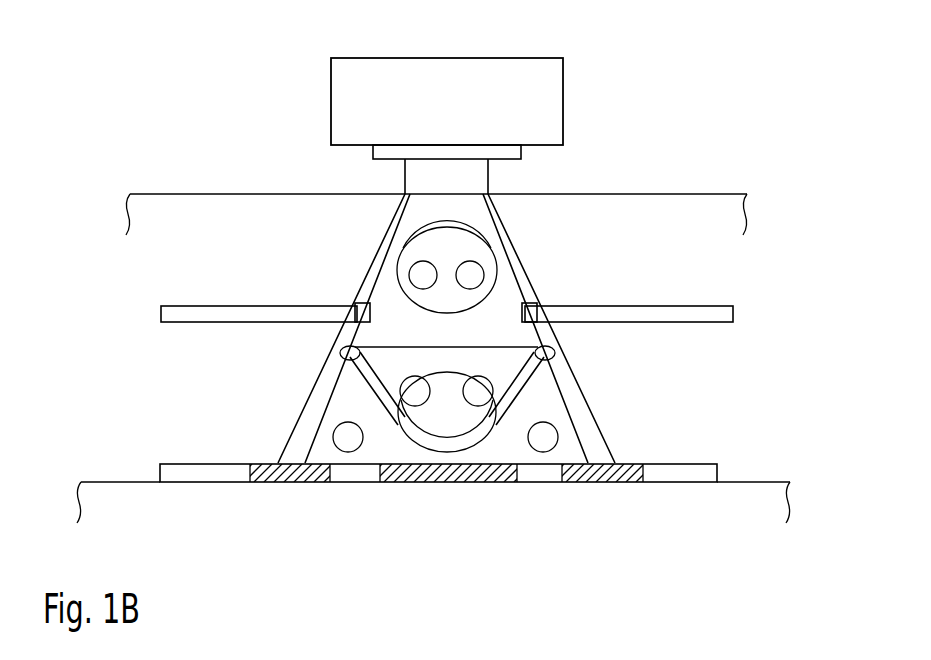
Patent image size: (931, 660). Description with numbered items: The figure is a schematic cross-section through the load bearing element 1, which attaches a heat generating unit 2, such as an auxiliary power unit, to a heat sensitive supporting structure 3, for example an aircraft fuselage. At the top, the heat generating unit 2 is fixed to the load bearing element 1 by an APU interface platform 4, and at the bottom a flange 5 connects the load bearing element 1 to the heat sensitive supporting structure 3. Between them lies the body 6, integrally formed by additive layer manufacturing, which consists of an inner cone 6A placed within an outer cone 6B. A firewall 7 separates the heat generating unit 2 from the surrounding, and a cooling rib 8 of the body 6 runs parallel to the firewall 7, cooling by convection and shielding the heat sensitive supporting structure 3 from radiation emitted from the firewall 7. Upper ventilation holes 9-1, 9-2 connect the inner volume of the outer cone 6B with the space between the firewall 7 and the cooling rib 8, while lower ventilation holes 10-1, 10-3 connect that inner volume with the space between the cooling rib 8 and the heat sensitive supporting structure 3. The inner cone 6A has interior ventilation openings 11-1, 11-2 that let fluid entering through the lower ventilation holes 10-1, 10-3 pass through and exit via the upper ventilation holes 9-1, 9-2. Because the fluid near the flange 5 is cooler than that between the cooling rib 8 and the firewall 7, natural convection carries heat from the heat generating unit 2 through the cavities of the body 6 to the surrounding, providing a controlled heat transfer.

The load bearing element 1 is at (762, 118).
The heat generating unit 2 is at (455, 112).
The heat sensitive supporting structure 3 is at (768, 525).
The APU interface platform 4 is at (508, 152).
The flange 5 is at (685, 472).
The body 6 is at (455, 344).
The inner cone 6A is at (370, 385).
The outer cone 6B is at (377, 273).
The firewall 7 is at (663, 194).
The cooling rib 8 is at (712, 312).
The ventilation hole 9-1 is at (484, 267).
The ventilation hole 9-2 is at (412, 266).
The ventilation hole 10-1 is at (543, 452).
The ventilation hole 10-3 is at (348, 452).
The interior ventilation opening 11-1 is at (478, 405).
The interior ventilation opening 11-2 is at (413, 405).